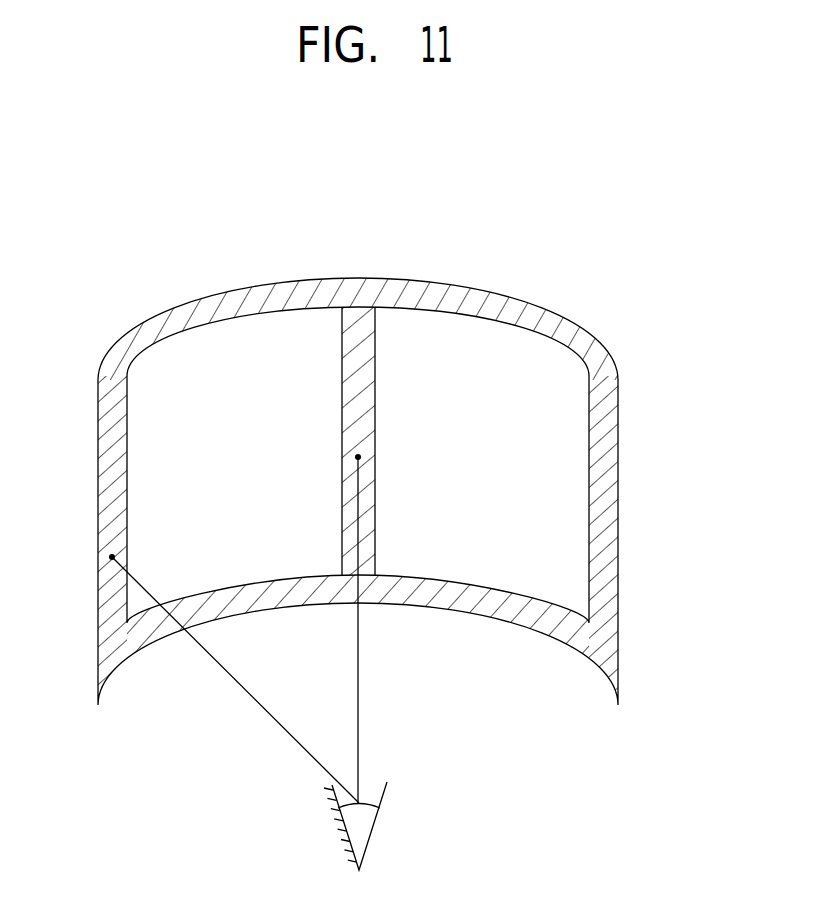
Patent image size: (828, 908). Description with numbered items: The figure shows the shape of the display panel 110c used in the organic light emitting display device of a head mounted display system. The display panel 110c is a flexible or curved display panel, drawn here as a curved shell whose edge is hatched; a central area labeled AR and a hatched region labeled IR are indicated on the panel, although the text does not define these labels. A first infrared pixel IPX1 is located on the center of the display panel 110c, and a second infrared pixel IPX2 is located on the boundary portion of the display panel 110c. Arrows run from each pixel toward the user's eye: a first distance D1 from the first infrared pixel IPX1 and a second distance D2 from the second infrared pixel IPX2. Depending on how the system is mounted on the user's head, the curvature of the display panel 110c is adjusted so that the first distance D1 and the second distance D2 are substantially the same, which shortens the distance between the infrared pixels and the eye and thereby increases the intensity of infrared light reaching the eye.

The display panel 110c is at (399, 453).
The active region AR is at (572, 415).
The inactive region IR is at (603, 490).
The first infrared pixel IPX1 is at (360, 440).
The second infrared pixel IPX2 is at (81, 554).
The first distance D1 is at (358, 663).
The second distance D2 is at (235, 680).